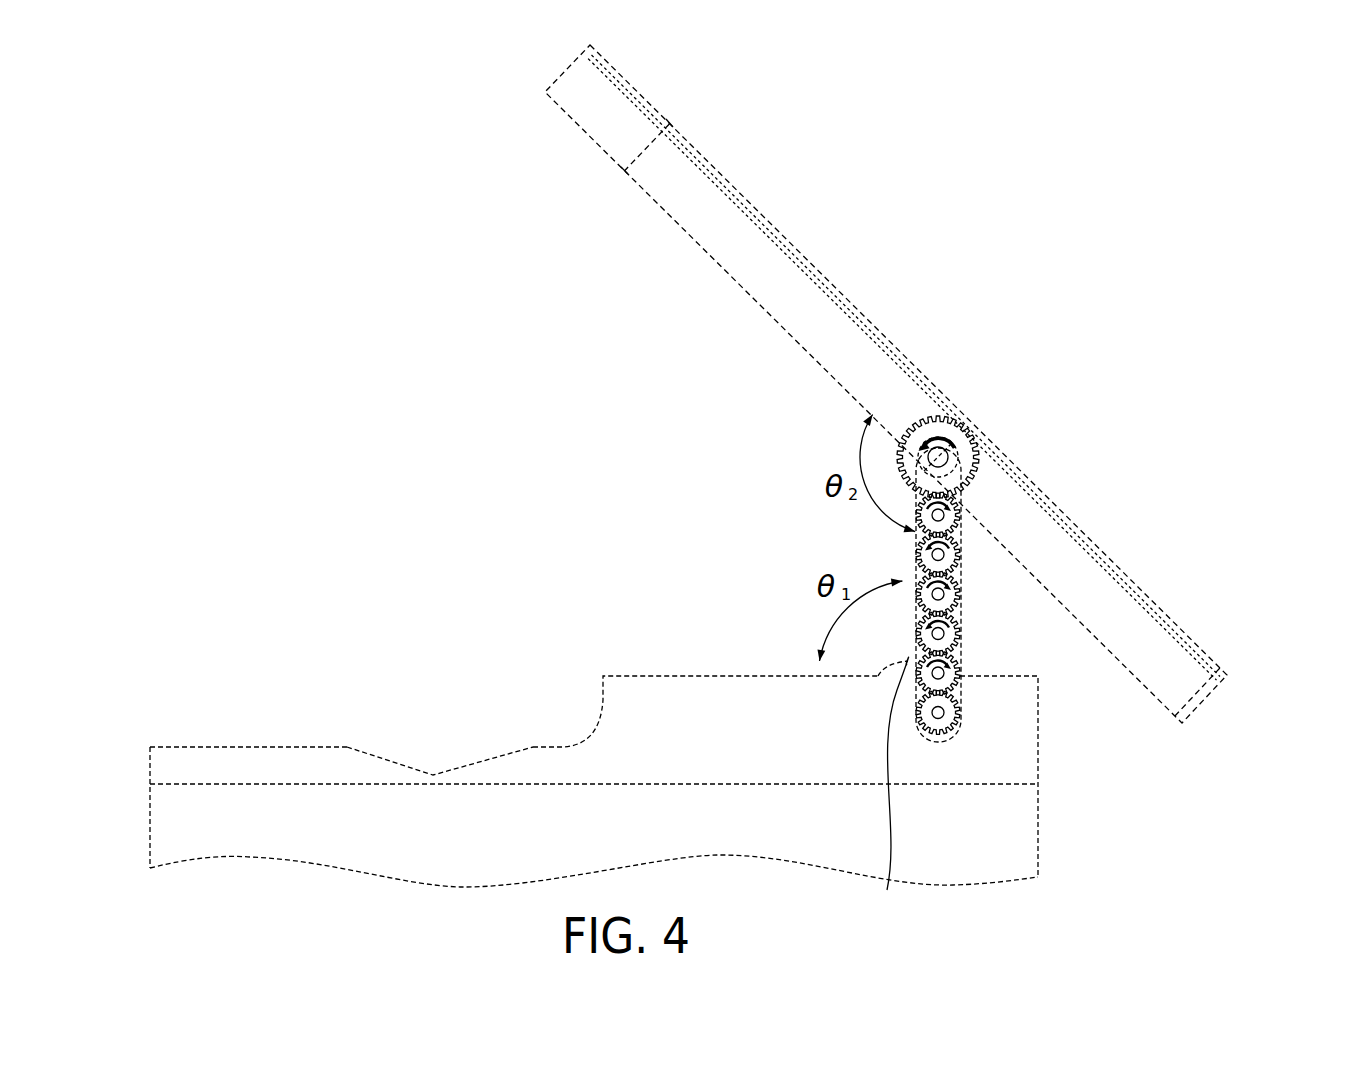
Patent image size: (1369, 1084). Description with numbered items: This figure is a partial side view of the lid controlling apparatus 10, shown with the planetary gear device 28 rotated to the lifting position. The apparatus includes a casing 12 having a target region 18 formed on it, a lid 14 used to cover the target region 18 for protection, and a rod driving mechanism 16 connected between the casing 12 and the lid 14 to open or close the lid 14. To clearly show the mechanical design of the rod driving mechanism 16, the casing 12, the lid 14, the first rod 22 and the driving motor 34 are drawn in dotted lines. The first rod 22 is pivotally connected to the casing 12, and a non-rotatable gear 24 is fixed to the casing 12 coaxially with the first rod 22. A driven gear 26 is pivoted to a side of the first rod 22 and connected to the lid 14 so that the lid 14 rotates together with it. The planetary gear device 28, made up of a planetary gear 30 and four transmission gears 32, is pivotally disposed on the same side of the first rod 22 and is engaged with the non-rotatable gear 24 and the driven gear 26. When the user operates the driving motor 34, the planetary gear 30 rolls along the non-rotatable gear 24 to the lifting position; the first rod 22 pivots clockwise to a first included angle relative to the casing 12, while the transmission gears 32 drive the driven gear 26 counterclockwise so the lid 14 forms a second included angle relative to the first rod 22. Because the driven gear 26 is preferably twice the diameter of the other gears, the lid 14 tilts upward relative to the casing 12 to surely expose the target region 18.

The lid controlling apparatus 10 is at (215, 255).
The casing 12 is at (632, 774).
The lid 14 is at (582, 112).
The rod driving mechanism 16 is at (1322, 320).
The target region 18 is at (393, 760).
The first rod 22 is at (960, 733).
The non-rotatable gear 24 is at (962, 712).
The driven gear 26 is at (977, 462).
The planetary gear device 28 is at (1238, 380).
The planetary gear 30 is at (962, 673).
The transmission gear 32 is at (962, 515).
The driving motor 34 is at (890, 793).